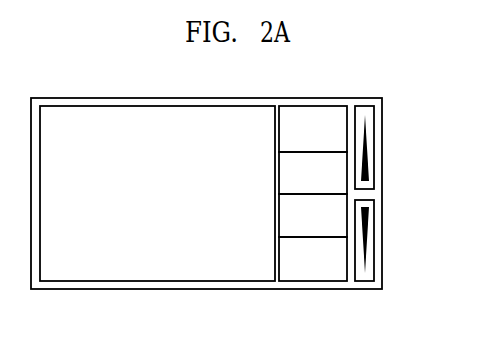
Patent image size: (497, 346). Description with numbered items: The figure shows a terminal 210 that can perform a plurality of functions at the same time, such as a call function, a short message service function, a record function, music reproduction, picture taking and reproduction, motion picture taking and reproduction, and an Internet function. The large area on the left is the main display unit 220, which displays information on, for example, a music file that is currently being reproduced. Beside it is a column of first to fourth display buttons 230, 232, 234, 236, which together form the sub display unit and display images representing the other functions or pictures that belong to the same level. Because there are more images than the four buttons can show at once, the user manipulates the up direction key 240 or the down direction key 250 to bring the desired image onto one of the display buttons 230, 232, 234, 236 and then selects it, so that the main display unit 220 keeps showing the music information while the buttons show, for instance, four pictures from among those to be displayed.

The terminal 210 is at (303, 98).
The main display unit 220 is at (96, 270).
The first display button 230 is at (290, 128).
The second display button 232 is at (290, 173).
The third display button 234 is at (290, 216).
The fourth display button 236 is at (290, 251).
The up direction key 240 is at (374, 117).
The down direction key 250 is at (374, 213).